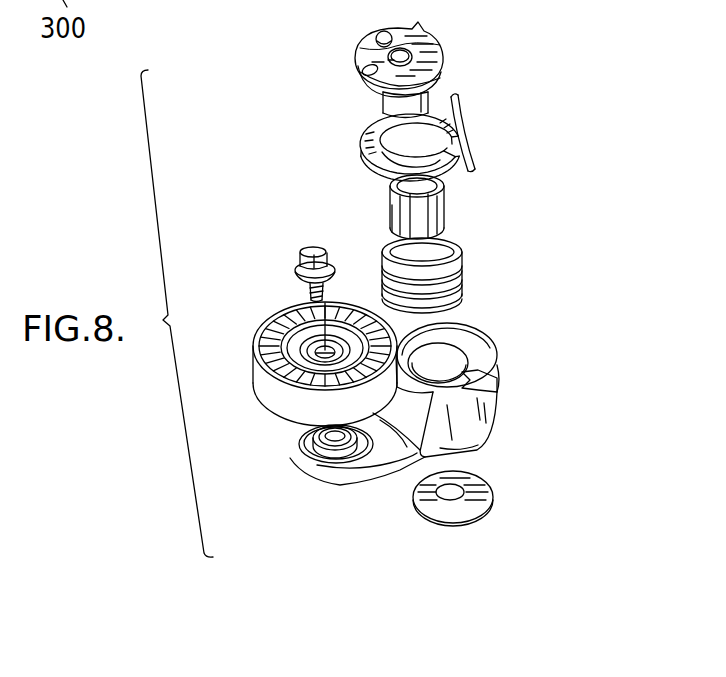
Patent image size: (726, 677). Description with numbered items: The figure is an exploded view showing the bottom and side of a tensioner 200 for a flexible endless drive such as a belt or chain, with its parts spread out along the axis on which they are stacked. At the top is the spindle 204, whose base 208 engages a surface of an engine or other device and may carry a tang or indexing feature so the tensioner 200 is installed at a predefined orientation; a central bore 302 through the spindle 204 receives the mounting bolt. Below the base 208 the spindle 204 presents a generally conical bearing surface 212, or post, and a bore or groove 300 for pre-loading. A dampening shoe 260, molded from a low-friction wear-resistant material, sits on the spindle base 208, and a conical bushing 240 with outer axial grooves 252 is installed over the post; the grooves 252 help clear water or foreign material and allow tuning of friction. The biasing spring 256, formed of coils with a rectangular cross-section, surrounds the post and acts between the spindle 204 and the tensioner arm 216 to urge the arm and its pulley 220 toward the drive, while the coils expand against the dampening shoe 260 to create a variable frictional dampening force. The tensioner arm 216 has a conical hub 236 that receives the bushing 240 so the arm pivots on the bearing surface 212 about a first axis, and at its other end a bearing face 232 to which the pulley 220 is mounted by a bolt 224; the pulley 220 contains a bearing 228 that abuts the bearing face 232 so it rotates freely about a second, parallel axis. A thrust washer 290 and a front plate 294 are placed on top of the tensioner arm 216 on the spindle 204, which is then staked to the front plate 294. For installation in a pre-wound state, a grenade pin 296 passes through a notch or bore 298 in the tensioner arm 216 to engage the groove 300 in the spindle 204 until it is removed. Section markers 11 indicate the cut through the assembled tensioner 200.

The tensioner 200 is at (278, 210).
The base 208 is at (448, 42).
The bore or groove 300 is at (443, 76).
The central bore 302 is at (360, 46).
The spindle 204 is at (382, 94).
The bearing surface 212 is at (356, 119).
The dampening shoe 260 is at (460, 172).
The grenade pin 296 is at (465, 112).
The conical bushing 240 is at (446, 204).
The outer axial grooves 252 is at (392, 218).
The biasing spring 256 is at (466, 248).
The bolt 224 is at (296, 262).
The pulley 220 is at (260, 386).
The bearing 228 is at (282, 327).
The bearing face 232 is at (327, 460).
The tensioner arm 216 is at (497, 398).
The conical hub 236 is at (473, 367).
The notch or bore 298 is at (497, 387).
The thrust washer 290 is at (482, 453).
The front plate 294 is at (440, 510).
The section line 11 is at (505, 325).